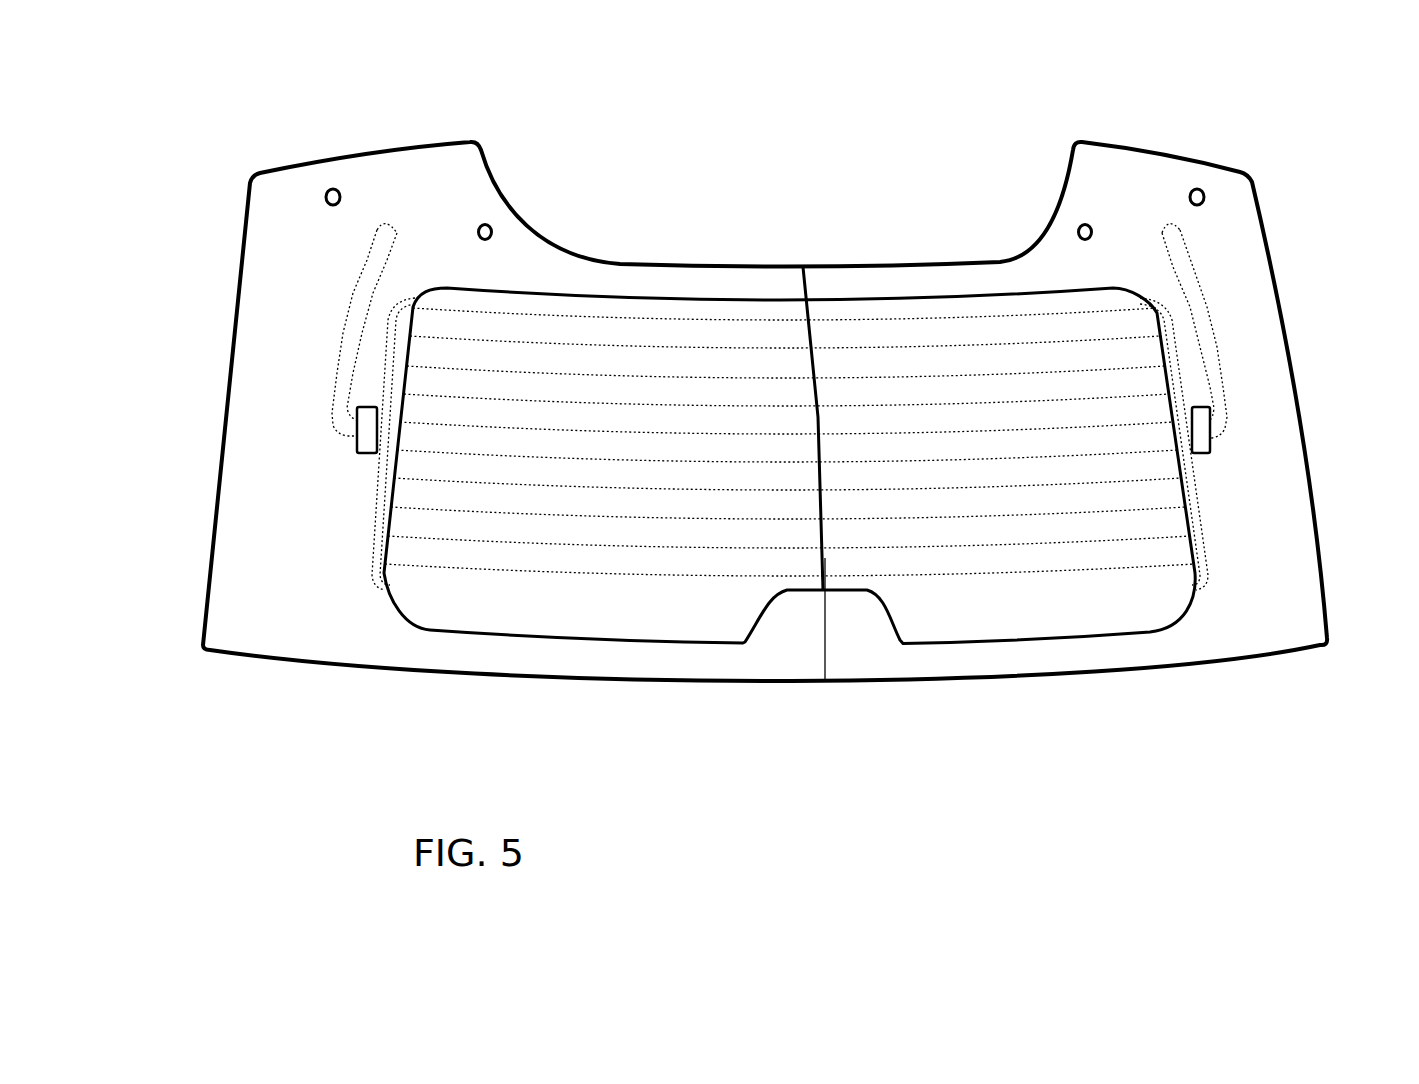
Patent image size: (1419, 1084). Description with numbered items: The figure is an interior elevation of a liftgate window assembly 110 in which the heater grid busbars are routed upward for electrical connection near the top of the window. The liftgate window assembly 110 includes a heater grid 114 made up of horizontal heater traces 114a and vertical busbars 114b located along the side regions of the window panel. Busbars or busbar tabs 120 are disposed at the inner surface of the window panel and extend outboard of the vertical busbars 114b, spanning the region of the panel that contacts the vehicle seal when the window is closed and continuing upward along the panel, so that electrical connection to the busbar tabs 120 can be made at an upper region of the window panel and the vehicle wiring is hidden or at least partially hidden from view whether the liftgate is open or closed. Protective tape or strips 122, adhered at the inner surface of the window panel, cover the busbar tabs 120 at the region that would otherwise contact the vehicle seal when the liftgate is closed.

The liftgate window assembly 110 is at (819, 134).
The heater grid 114 is at (696, 311).
The heater traces 114a is at (972, 570).
The vertical busbars 114b is at (377, 520).
The busbar tabs 120 is at (360, 297).
The protective tape or strips 122 is at (365, 442).